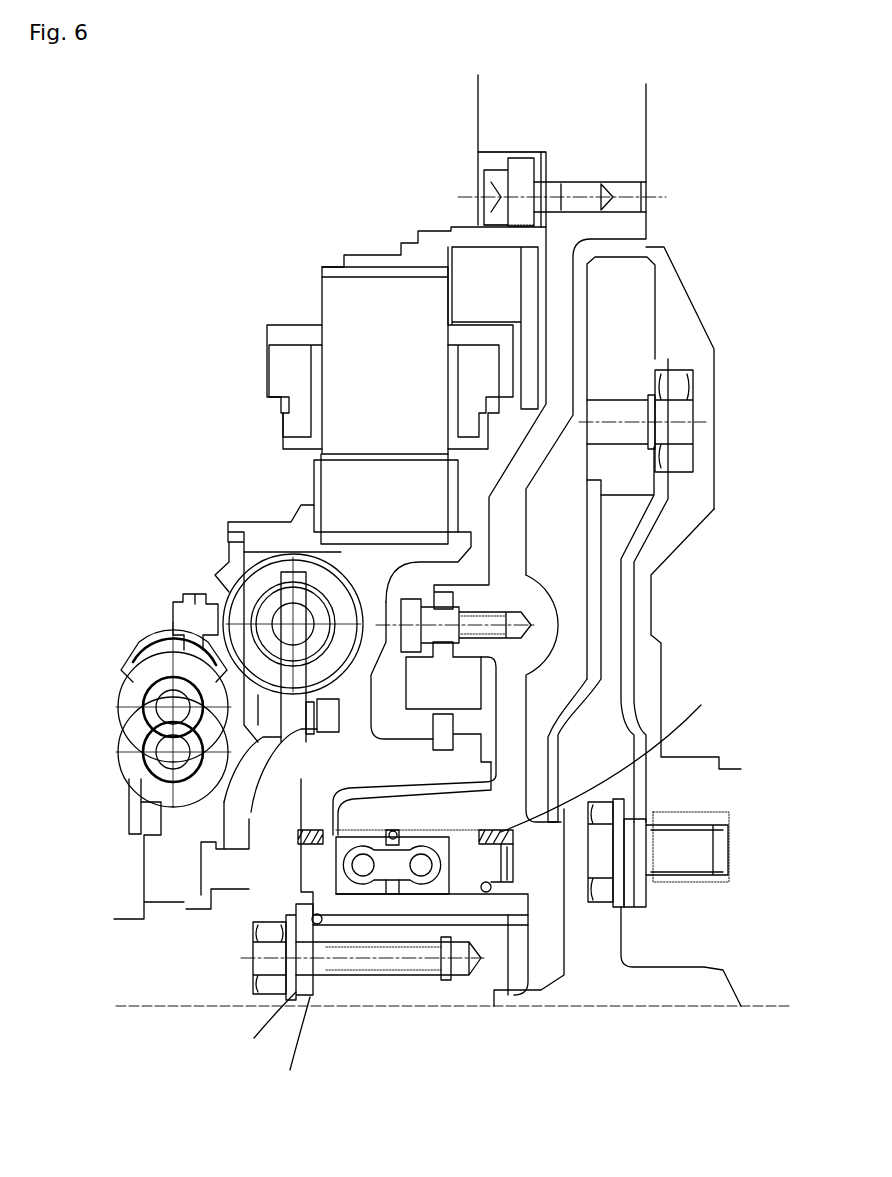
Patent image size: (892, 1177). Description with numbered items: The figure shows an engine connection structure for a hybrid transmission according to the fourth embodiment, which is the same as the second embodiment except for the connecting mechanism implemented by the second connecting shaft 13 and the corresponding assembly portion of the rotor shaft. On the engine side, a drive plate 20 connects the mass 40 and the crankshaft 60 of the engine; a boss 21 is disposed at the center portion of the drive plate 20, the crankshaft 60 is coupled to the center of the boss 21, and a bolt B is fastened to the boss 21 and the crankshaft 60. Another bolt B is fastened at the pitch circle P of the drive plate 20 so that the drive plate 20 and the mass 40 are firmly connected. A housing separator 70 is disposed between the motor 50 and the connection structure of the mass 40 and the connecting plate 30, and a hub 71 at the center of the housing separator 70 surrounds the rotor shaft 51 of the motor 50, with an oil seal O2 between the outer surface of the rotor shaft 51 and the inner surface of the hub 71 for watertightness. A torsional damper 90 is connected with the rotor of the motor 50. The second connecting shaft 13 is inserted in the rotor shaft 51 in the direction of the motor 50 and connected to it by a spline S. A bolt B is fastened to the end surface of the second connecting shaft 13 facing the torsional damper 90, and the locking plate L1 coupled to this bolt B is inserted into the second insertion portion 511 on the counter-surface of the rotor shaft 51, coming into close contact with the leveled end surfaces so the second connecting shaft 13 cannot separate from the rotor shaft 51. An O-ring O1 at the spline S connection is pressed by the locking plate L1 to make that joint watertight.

The motor 50 is at (318, 296).
The mass 40 is at (630, 296).
The pitch circle P is at (627, 417).
The bolt B is at (680, 417).
The housing separator 70 is at (527, 461).
The connecting plate 30 is at (597, 592).
The drive plate 20 is at (628, 630).
The boss 21 is at (643, 893).
The crankshaft 60 is at (672, 937).
The oil seal O2 is at (610, 755).
The torsional damper 90 is at (150, 640).
The hub 71 is at (363, 820).
The second connecting shaft 13 is at (440, 985).
The second insertion portion 511 is at (295, 893).
The spline S is at (448, 917).
The rotor shaft 51 is at (515, 895).
The O-ring O1 is at (261, 1026).
The locking plate L1 is at (285, 1047).